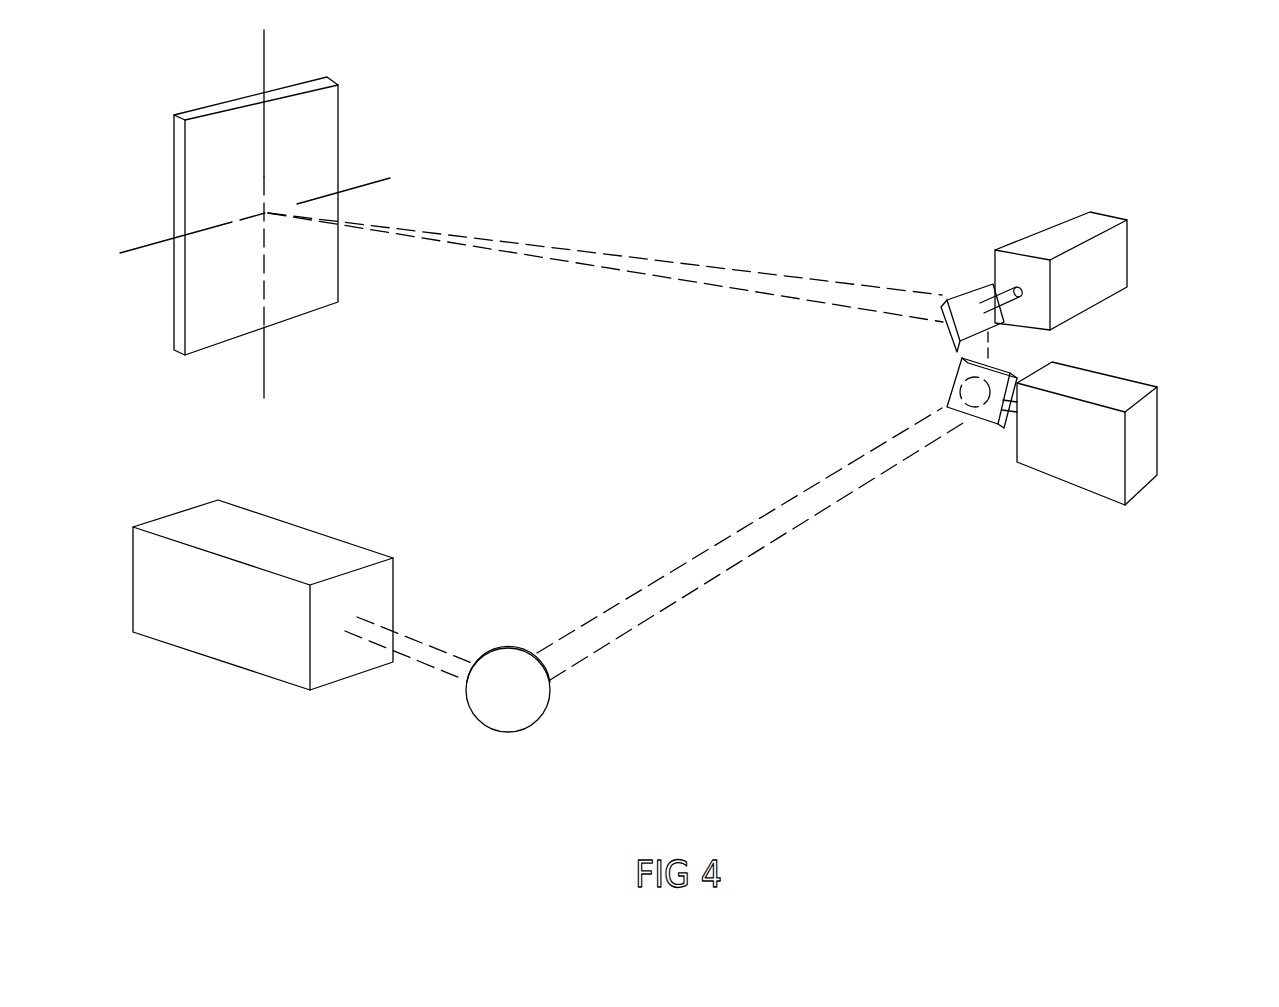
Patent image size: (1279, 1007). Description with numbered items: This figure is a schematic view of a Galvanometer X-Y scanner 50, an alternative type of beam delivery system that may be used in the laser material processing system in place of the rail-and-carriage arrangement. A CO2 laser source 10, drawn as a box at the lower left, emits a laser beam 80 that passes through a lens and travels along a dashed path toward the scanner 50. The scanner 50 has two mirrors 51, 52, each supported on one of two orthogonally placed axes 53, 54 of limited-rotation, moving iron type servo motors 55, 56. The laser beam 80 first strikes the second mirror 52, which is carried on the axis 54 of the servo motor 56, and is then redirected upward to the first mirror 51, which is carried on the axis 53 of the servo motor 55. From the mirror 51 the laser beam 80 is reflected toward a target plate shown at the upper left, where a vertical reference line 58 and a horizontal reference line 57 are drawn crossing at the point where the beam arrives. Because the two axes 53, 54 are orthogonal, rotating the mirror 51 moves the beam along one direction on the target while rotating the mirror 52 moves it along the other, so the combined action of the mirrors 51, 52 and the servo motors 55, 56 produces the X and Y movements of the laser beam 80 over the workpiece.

The CO2 laser source 10 is at (307, 542).
The Galvanometer type scanner 50 is at (605, 168).
The mirror 51 is at (965, 318).
The mirror 52 is at (985, 413).
The axis 53 is at (1008, 292).
The axis 54 is at (1000, 428).
The servo motor 55 is at (1087, 285).
The servo motor 56 is at (1137, 439).
The horizontal axis 57 is at (363, 184).
The vertical axis 58 is at (263, 58).
The laser beam 80 is at (777, 520).